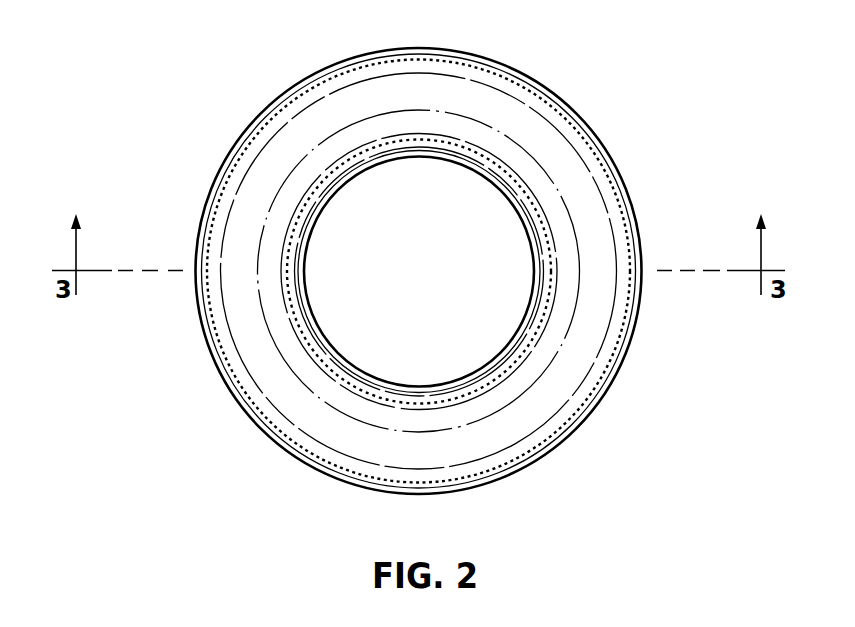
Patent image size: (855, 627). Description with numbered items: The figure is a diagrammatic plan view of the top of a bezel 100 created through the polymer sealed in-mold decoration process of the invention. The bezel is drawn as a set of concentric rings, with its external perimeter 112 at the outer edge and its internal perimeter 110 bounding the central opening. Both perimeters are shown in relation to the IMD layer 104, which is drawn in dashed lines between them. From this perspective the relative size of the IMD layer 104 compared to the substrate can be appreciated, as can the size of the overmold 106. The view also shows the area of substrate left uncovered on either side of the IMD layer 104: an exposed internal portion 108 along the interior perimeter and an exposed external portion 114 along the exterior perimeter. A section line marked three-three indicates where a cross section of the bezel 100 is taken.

The bezel 100 is at (697, 163).
The IMD layer 104 is at (598, 137).
The overmold 106 is at (603, 393).
The exposed internal portion 108 is at (535, 304).
The internal perimeter 110 is at (518, 213).
The external perimeter 112 is at (208, 330).
The exposed external portion 114 is at (257, 428).